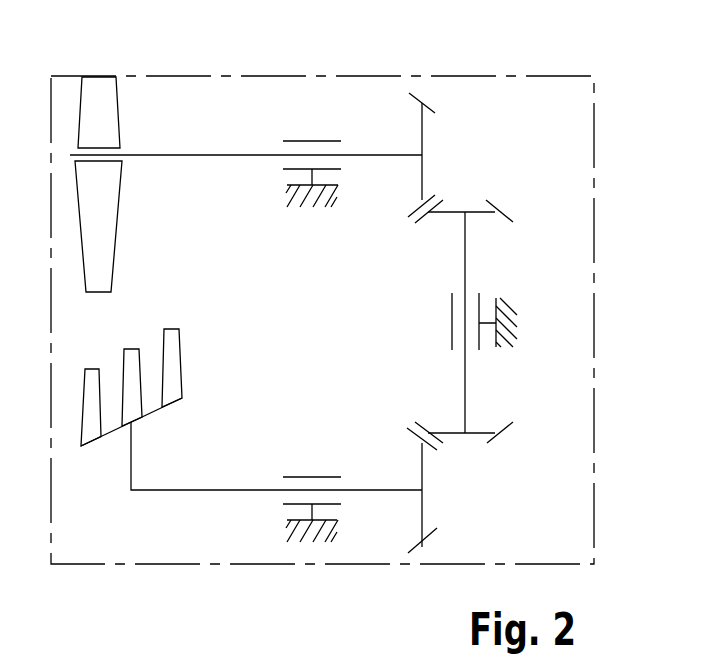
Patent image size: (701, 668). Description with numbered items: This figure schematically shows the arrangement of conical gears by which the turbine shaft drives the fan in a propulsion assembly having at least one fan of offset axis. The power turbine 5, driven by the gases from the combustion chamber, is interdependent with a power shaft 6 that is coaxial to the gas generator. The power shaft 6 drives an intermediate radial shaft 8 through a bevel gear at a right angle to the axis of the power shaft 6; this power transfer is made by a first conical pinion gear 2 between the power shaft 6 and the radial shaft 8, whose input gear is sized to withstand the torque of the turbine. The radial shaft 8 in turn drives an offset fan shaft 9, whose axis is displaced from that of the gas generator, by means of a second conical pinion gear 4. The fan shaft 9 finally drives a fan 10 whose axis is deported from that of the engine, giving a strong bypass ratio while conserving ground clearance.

The first conical pinion gear 2 is at (182, 377).
The second conical pinion gear 4 is at (458, 173).
The power turbine 5 is at (462, 462).
The power shaft 6 is at (208, 490).
The intermediate radial shaft 8 is at (465, 242).
The fan shaft 9 is at (197, 156).
The fan 10 is at (142, 116).